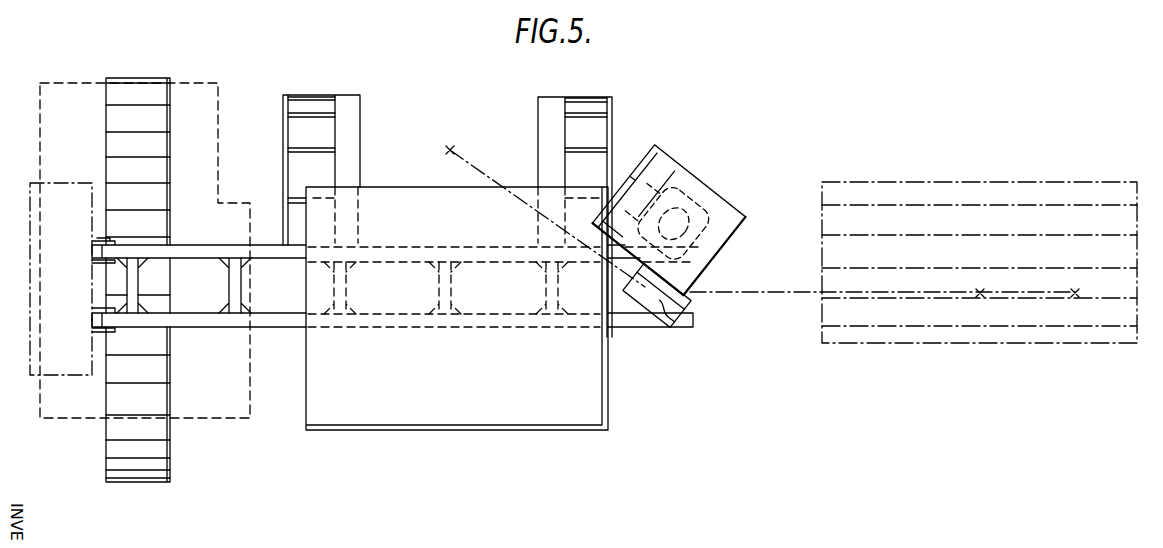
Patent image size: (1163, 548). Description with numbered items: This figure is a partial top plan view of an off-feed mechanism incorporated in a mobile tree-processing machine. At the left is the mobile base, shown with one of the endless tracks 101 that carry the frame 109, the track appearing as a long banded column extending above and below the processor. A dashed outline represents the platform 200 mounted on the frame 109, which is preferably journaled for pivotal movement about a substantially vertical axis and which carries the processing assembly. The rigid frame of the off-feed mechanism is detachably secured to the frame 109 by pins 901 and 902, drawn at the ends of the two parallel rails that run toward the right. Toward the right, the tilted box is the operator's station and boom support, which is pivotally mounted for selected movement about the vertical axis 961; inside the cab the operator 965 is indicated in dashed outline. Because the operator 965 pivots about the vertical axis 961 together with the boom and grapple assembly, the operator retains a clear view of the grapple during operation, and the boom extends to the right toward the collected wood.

The endless tracks 101 is at (157, 100).
The platform 200 is at (200, 125).
The frame 109 is at (50, 207).
The pin 901 is at (97, 237).
The pin 902 is at (108, 332).
The operator 965 is at (703, 210).
The vertical axis 961 is at (688, 312).